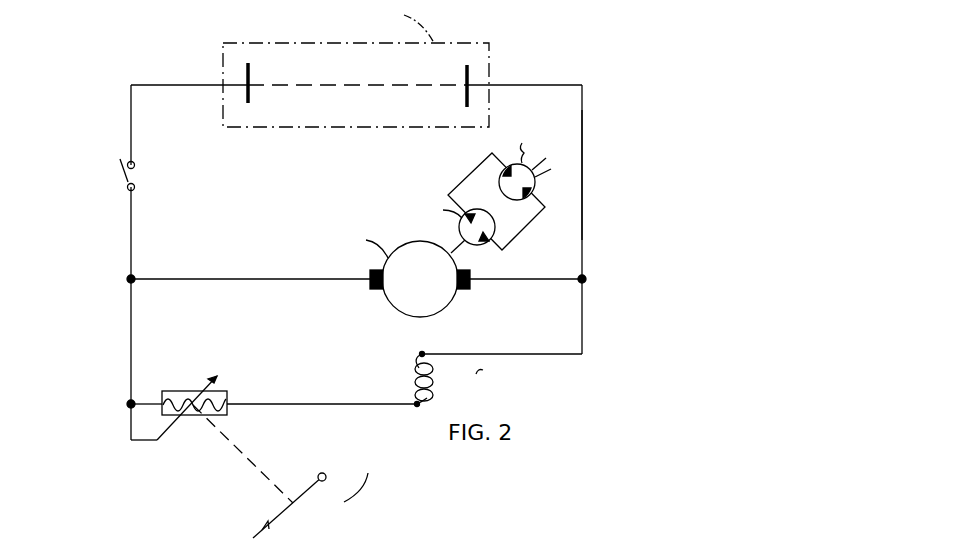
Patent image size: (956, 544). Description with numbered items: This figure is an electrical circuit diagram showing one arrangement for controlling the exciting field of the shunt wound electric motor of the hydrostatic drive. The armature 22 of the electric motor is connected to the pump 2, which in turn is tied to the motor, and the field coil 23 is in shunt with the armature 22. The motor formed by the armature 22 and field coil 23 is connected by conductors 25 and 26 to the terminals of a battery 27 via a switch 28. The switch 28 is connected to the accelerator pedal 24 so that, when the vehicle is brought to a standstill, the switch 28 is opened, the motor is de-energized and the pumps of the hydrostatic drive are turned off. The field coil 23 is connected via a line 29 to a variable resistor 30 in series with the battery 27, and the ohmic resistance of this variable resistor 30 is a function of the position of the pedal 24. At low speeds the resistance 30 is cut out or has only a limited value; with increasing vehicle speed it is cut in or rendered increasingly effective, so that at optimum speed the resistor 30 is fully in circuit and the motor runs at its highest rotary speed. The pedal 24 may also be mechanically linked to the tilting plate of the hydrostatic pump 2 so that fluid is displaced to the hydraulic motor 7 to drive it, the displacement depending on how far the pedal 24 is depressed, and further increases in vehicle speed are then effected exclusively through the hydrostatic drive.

The conductor 26 is at (175, 85).
The battery 27 is at (287, 126).
The switch 28 is at (126, 176).
The conductor 25 is at (582, 175).
The hydraulic motor 7 is at (543, 174).
The pump 2 is at (481, 244).
The armature 22 is at (400, 312).
The field coil 23 is at (432, 380).
The line 29 is at (311, 404).
The variable resistor 30 is at (183, 391).
The accelerator pedal 24 is at (300, 495).